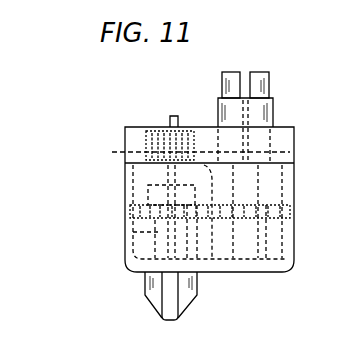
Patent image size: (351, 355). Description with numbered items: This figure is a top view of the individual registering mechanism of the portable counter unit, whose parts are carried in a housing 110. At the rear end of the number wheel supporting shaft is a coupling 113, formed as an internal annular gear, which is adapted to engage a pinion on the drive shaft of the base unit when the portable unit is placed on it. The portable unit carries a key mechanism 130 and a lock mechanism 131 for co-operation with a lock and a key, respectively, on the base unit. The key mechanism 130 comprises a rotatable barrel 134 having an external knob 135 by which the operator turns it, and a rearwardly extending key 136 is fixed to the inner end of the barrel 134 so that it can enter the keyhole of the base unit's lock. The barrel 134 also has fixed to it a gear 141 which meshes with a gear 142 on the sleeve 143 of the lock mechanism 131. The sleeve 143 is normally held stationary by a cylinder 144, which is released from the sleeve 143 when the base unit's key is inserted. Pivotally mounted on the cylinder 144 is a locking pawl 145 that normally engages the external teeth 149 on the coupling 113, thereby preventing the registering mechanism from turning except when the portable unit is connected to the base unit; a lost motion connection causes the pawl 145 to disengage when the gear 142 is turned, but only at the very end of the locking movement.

The housing 110 is at (125, 178).
The coupling 113 is at (150, 124).
The key 136 is at (173, 116).
The cylinder 144 is at (273, 107).
The sleeve 143 is at (230, 72).
The lock mechanism 131 is at (269, 81).
The locking pawl 145 is at (298, 147).
The external teeth 149 is at (184, 154).
The gear 142 is at (297, 207).
The gear 141 is at (130, 208).
The rotatable barrel 134 is at (132, 233).
The external knob 135 is at (196, 293).
The key mechanism 130 is at (145, 292).